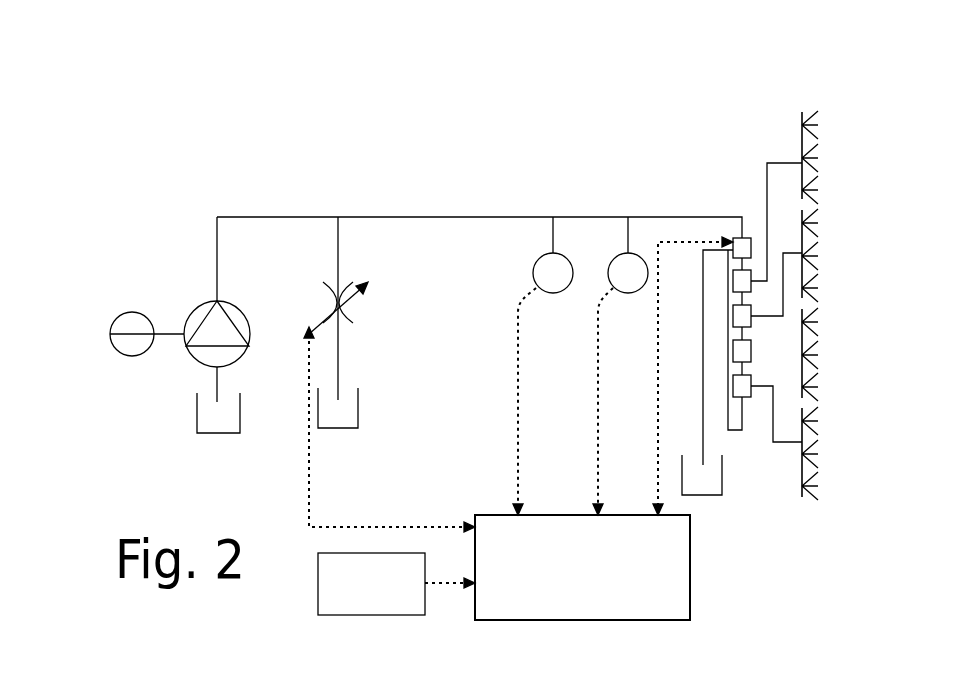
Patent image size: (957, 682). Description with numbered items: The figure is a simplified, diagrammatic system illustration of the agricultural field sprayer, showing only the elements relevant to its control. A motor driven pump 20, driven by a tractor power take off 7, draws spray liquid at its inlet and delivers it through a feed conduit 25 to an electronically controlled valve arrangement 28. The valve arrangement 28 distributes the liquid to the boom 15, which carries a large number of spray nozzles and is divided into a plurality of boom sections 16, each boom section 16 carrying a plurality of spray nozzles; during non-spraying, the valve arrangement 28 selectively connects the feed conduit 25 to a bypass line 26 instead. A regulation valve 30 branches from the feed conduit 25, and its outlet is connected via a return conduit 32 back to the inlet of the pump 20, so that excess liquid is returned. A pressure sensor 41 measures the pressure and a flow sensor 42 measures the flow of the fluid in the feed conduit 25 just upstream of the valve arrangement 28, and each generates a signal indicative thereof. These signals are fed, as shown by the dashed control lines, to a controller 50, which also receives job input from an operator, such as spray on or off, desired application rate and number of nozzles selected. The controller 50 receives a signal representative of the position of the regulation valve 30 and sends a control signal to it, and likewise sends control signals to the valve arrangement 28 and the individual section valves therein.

The power take off 7 is at (111, 320).
The pump 20 is at (238, 318).
The feed conduit 25 is at (473, 217).
The regulation valve 30 is at (355, 310).
The return conduit 32 is at (338, 352).
The flow sensor 42 is at (533, 268).
The pressure sensor 41 is at (612, 260).
The valve arrangement 28 is at (754, 224).
The bypass line 26 is at (703, 382).
The boom section 16 is at (802, 242).
The boom 15 is at (894, 133).
The controller 50 is at (518, 428).